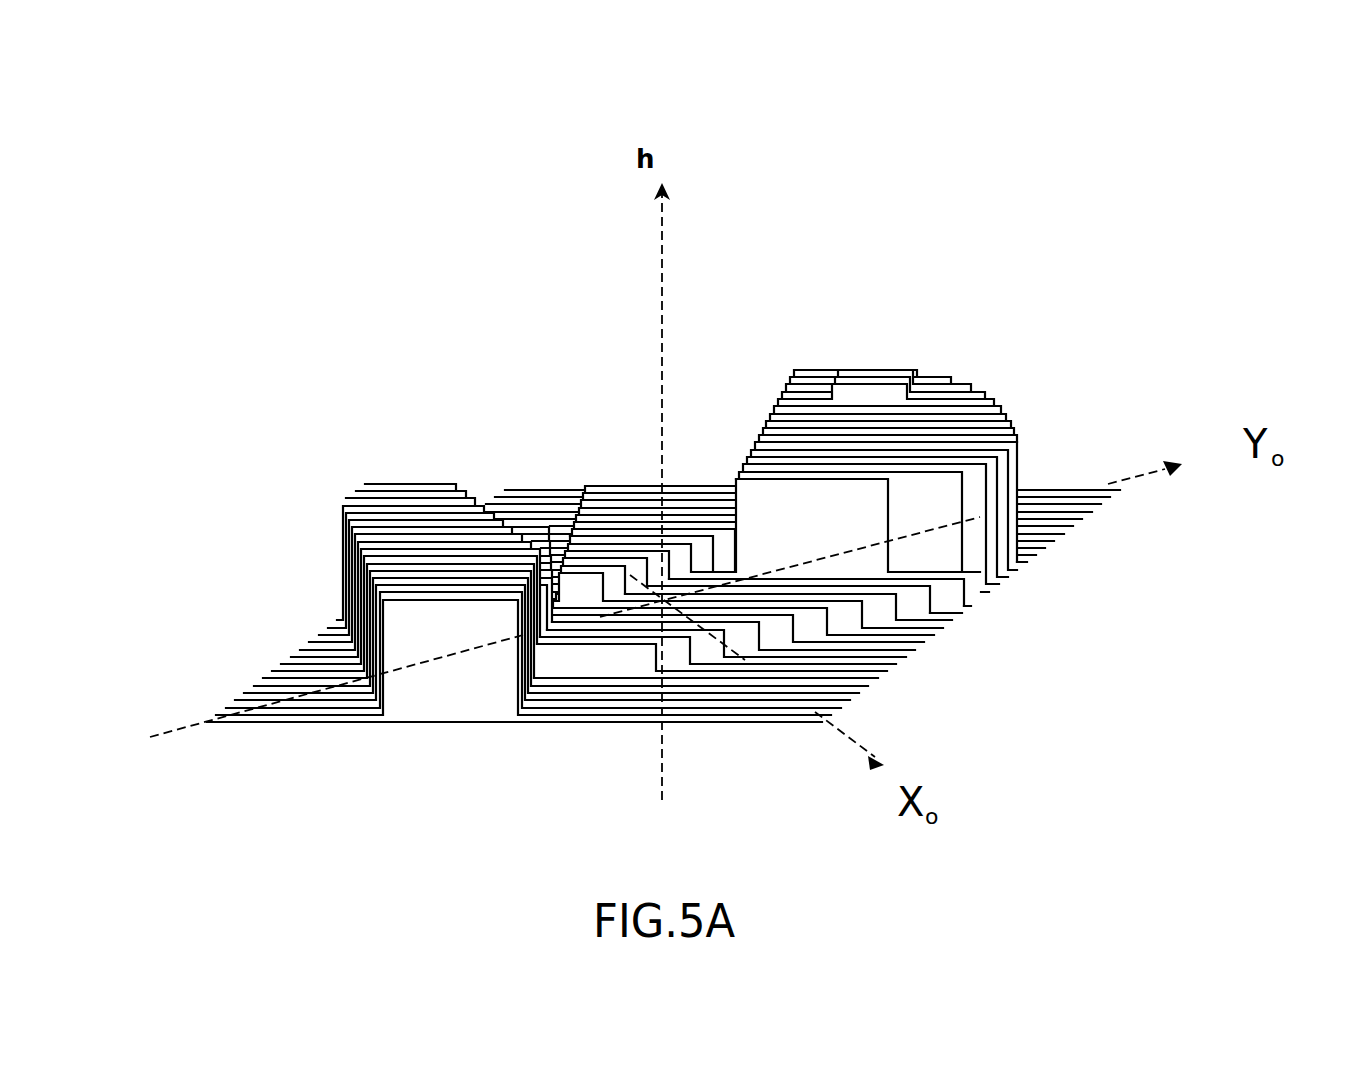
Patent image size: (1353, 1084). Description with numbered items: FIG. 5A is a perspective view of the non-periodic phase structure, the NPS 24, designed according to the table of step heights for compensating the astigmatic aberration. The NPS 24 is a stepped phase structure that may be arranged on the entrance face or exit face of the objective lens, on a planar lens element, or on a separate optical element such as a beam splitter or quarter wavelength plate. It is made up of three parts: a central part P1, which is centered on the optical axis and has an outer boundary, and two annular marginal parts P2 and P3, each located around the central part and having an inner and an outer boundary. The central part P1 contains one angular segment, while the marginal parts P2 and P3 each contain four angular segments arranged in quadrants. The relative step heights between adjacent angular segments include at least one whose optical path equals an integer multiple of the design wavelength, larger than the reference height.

The non-periodic phase structure (NPS) 24 is at (318, 96).
The central part P1 is at (628, 492).
The marginal part P2 is at (762, 433).
The marginal part P3 is at (874, 347).